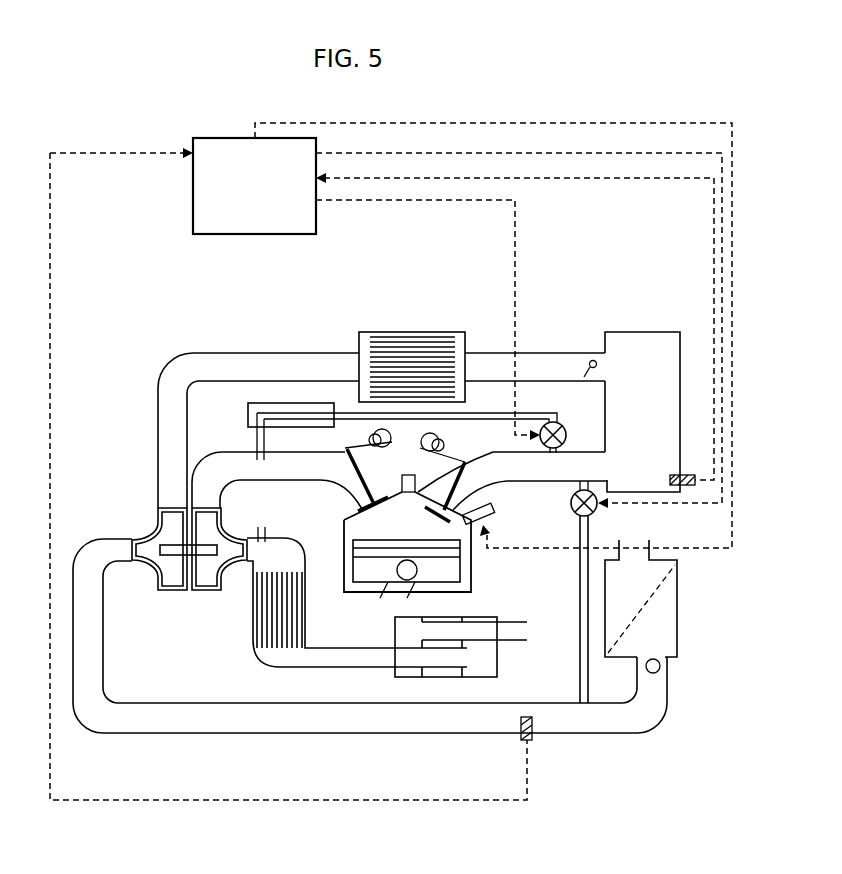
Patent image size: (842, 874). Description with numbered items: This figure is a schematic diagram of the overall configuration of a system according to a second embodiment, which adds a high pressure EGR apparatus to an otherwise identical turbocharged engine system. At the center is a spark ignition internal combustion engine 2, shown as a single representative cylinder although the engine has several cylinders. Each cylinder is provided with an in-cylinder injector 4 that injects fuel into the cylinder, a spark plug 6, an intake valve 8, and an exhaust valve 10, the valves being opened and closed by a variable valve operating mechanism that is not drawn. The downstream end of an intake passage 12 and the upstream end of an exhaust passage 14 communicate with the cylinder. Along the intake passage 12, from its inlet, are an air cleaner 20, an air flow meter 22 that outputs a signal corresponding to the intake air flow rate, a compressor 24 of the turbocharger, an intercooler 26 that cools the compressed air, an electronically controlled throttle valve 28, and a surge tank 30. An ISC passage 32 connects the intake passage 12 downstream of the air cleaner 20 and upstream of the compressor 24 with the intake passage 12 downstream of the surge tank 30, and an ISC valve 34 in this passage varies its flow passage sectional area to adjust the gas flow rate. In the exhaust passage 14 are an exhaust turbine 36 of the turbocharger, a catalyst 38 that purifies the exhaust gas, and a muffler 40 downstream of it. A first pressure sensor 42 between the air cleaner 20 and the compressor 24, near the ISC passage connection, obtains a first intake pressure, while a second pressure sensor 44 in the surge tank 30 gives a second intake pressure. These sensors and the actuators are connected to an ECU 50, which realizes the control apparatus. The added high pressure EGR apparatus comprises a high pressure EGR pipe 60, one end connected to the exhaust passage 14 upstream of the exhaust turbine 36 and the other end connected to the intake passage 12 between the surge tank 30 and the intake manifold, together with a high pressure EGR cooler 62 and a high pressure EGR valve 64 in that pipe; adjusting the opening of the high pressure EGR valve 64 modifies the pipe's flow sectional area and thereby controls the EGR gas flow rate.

The internal combustion engine 2 is at (486, 576).
The in-cylinder injector 4 is at (496, 512).
The spark plug 6 is at (416, 484).
The intake valve 8 is at (460, 480).
The exhaust valve 10 is at (362, 480).
The intake passage 12 is at (298, 352).
The exhaust passage 14 is at (308, 482).
The air cleaner 20 is at (678, 613).
The air flow meter 22 is at (661, 667).
The compressor 24 is at (148, 580).
The intercooler 26 is at (415, 333).
The throttle valve 28 is at (588, 360).
The surge tank 30 is at (655, 332).
The ISC passage 32 is at (591, 524).
The ISC valve 34 is at (576, 512).
The exhaust turbine 36 is at (210, 578).
The catalyst 38 is at (306, 612).
The muffler 40 is at (497, 660).
The first pressure sensor 42 is at (534, 740).
The second pressure sensor 44 is at (684, 475).
The ECU 50 is at (238, 138).
The high pressure EGR pipe 60 is at (485, 413).
The high pressure EGR cooler 62 is at (323, 403).
The high pressure EGR valve 64 is at (563, 431).